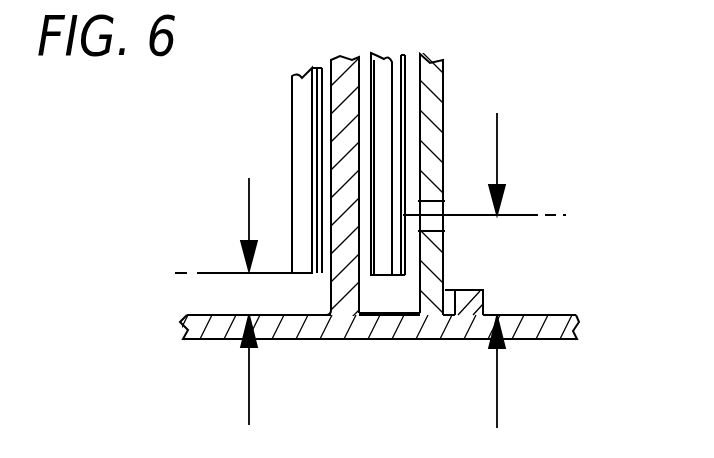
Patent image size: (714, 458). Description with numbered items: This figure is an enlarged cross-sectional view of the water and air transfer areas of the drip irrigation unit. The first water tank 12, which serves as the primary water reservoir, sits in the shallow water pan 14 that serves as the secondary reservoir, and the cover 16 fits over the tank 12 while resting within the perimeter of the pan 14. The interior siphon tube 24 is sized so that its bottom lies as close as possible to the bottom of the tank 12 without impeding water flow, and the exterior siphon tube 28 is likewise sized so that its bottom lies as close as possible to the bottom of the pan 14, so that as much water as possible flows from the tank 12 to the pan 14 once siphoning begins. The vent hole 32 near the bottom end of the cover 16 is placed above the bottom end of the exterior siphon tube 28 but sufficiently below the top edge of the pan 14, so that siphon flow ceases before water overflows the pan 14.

The first water tank 12 is at (304, 301).
The water pan 14 is at (552, 315).
The cover 16 is at (445, 255).
The interior siphon tube 24 is at (292, 106).
The exterior siphon tube 28 is at (390, 98).
The vent hole 32 is at (447, 222).